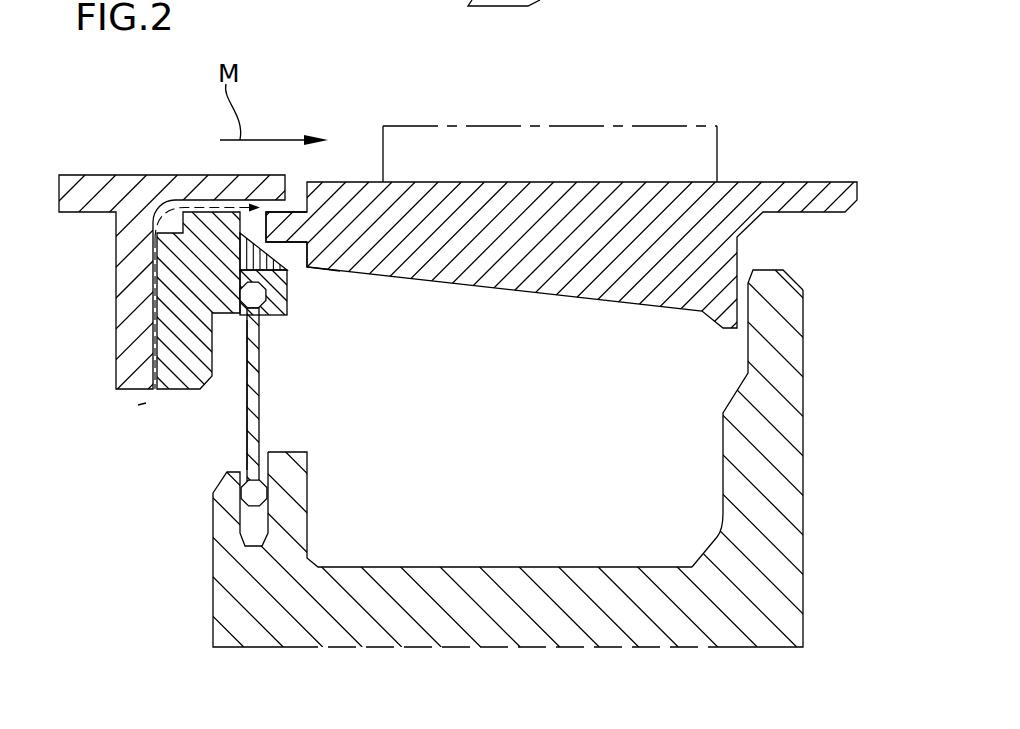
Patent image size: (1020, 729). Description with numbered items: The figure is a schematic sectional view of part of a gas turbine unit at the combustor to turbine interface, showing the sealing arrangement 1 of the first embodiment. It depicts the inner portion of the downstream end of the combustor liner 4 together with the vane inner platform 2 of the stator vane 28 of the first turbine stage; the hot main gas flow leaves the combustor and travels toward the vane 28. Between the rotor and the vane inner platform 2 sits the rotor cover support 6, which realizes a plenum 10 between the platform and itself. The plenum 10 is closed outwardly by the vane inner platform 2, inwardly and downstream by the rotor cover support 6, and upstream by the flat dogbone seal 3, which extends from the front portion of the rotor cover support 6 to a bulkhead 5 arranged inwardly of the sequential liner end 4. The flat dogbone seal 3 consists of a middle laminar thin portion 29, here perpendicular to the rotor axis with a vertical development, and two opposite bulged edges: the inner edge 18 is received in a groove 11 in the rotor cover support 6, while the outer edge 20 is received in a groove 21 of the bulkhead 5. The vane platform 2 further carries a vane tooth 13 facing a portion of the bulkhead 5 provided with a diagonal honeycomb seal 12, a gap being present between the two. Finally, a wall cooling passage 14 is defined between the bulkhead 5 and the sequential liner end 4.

The sealing arrangement 1 is at (714, 79).
The vane inner platform 2 is at (767, 197).
The flat dogbone seal 3 is at (228, 447).
The combustor liner 4 is at (82, 175).
The bulkhead 5 is at (168, 350).
The rotor cover support 6 is at (610, 598).
The plenum 10 is at (700, 470).
The groove 11 is at (240, 528).
The diagonal honeycomb seal 12 is at (312, 274).
The vane tooth 13 is at (312, 223).
The wall cooling passage 14 is at (181, 177).
The inner edge 18 is at (267, 502).
The outer edge 20 is at (252, 306).
The groove 21 is at (267, 297).
The stator vane 28 is at (564, 168).
The middle laminar thin portion 29 is at (252, 373).